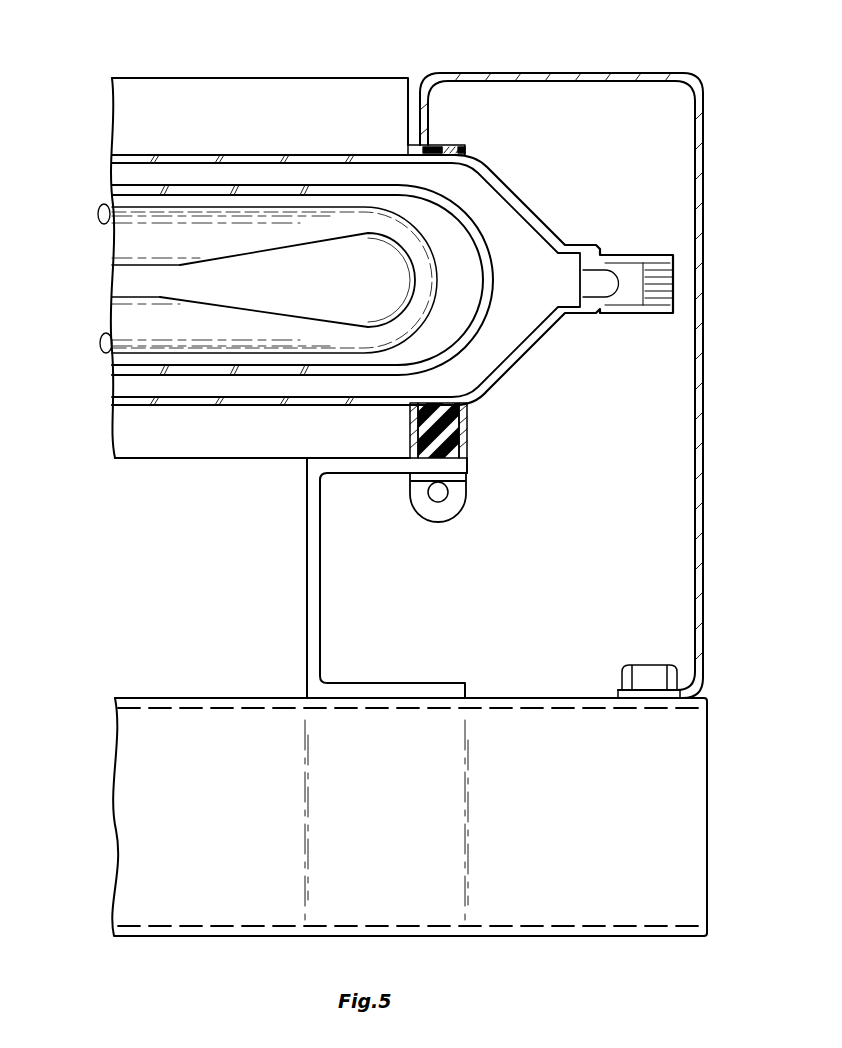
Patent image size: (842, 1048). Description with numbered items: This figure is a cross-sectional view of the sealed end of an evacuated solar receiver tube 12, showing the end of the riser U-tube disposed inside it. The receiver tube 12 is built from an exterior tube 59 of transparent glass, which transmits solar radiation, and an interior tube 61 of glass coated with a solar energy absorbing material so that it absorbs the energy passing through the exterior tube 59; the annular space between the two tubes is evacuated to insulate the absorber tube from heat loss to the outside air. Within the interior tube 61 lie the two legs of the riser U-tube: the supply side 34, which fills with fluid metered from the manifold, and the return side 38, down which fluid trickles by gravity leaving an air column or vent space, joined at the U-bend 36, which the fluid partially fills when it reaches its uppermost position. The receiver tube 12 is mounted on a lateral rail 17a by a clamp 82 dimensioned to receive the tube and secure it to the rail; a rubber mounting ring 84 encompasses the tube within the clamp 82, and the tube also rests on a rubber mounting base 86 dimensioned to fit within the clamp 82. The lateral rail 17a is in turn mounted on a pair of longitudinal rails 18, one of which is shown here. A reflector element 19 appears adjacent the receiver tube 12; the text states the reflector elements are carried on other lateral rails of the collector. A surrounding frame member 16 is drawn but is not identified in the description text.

The reflector element 19 is at (233, 77).
The evacuated solar receiver tube 12 is at (231, 152).
The exterior tube 59 is at (285, 157).
The interior tube 61 is at (320, 187).
The return side 38 is at (113, 233).
The supply side 34 is at (122, 323).
The U-bend 36 is at (410, 263).
The frame 16 is at (703, 148).
The clamp 82 is at (448, 145).
The rubber mounting ring 84 is at (455, 408).
The rubber mounting base 86 is at (452, 422).
The lateral rail 17a is at (323, 580).
The longitudinal rail 18 is at (685, 847).